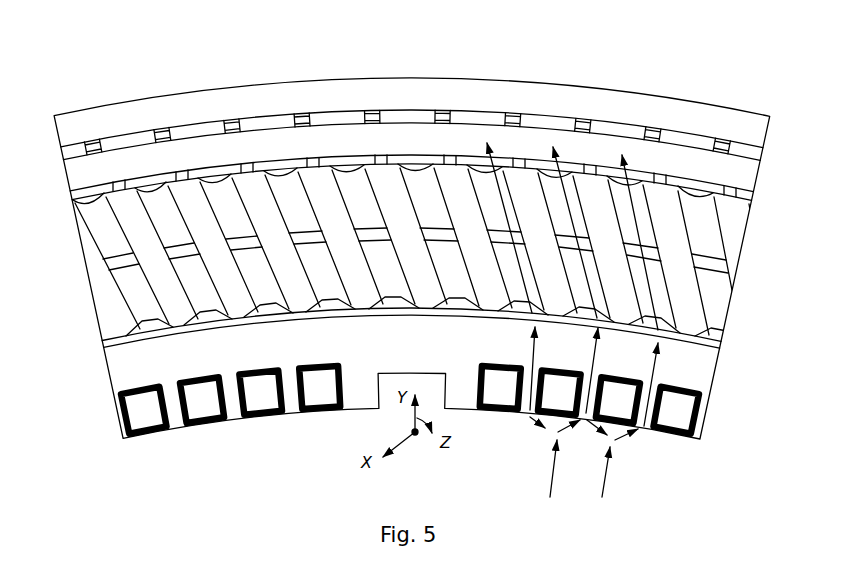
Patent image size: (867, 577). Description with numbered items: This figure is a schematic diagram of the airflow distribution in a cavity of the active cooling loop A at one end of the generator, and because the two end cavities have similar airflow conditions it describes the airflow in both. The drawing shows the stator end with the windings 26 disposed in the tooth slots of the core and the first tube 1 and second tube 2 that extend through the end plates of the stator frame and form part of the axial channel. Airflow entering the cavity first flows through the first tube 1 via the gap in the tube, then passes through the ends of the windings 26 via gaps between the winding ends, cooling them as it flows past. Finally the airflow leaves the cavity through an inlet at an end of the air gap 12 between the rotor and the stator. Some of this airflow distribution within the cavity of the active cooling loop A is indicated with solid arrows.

The air gap 12 is at (383, 130).
The windings 26 is at (312, 288).
The first tube 1 is at (410, 418).
The second tube 2 is at (325, 407).
The active cooling loop A is at (572, 323).